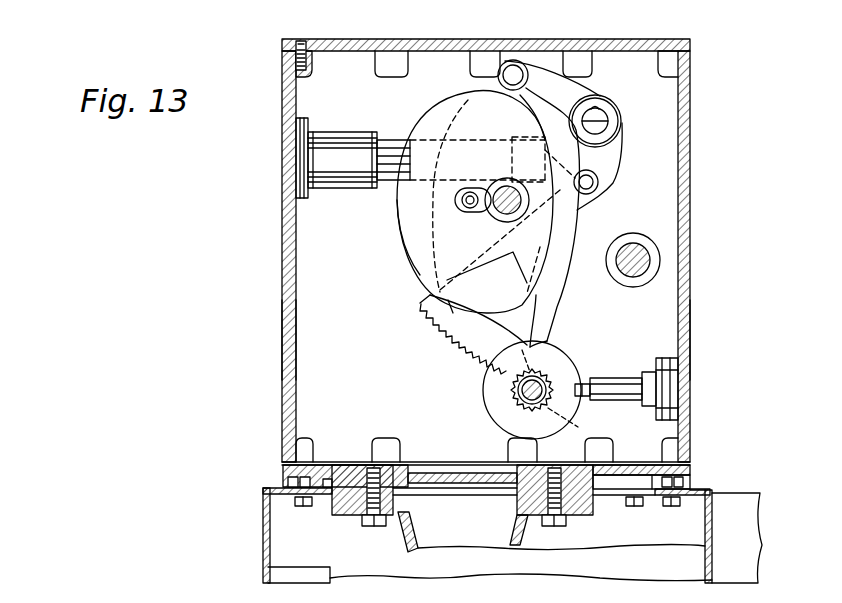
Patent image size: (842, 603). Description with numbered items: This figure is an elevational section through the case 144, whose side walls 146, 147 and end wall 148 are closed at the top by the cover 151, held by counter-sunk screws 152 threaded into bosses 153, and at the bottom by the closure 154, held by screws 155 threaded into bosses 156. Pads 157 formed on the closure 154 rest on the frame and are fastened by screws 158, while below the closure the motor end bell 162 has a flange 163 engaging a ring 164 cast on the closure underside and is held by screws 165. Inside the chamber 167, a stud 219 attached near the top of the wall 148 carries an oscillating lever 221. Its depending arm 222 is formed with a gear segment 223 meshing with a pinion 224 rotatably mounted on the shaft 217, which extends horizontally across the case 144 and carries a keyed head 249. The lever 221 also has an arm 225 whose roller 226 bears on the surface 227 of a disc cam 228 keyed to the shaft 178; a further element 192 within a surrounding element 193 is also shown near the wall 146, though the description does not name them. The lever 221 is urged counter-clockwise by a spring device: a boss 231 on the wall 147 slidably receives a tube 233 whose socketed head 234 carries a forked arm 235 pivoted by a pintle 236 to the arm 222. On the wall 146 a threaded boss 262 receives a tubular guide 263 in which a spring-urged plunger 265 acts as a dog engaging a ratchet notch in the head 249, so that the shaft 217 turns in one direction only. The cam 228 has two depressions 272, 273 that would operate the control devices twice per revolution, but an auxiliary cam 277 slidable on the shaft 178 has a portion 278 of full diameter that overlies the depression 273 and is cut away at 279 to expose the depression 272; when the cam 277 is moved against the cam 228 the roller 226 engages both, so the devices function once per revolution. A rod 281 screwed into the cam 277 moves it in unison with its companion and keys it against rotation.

The case 144 is at (690, 334).
The side wall 146 is at (688, 267).
The side wall 147 is at (284, 344).
The end wall 148 is at (307, 368).
The cover 151 is at (368, 41).
The counter-sunk screws 152 is at (294, 44).
The bosses 153 is at (312, 62).
The closure 154 is at (640, 466).
The screws 155 is at (290, 478).
The bosses 156 is at (332, 430).
The pads 157 is at (290, 479).
The screws 158 is at (295, 501).
The end bell 162 is at (522, 542).
The flange 163 is at (332, 497).
The ring 164 is at (352, 500).
The screws 165 is at (379, 526).
The chamber 167 is at (307, 254).
The shaft 178 is at (500, 212).
The shaft 192 is at (637, 258).
The bearing bushing 193 is at (645, 247).
The shaft 217 is at (520, 397).
The stud 219 is at (608, 119).
The lever 221 is at (607, 155).
The depending arm 222 is at (430, 296).
The gear segment 223 is at (450, 327).
The pinion 224 is at (568, 411).
The arm 225 is at (545, 78).
The roller 226 is at (498, 80).
The surface 227 is at (410, 232).
The disc cam 228 is at (556, 258).
The boss 231 is at (320, 118).
The tube 233 is at (388, 150).
The socketed head 234 is at (512, 159).
The forked arm 235 is at (600, 176).
The pintle 236 is at (602, 191).
The head 249 is at (485, 390).
The threaded boss 262 is at (670, 387).
The tubular guide 263 is at (622, 385).
The plunger 265 is at (588, 385).
The depression 272 is at (560, 314).
The depression 273 is at (466, 108).
The auxiliary cam 277 is at (405, 243).
The portion 278 is at (397, 201).
The cut-away 279 is at (540, 120).
The rod 281 is at (462, 201).